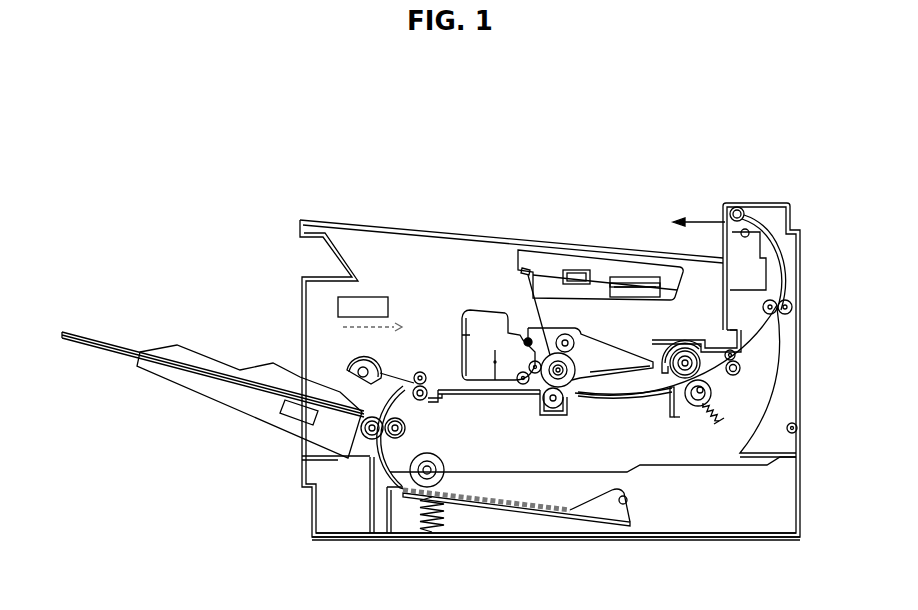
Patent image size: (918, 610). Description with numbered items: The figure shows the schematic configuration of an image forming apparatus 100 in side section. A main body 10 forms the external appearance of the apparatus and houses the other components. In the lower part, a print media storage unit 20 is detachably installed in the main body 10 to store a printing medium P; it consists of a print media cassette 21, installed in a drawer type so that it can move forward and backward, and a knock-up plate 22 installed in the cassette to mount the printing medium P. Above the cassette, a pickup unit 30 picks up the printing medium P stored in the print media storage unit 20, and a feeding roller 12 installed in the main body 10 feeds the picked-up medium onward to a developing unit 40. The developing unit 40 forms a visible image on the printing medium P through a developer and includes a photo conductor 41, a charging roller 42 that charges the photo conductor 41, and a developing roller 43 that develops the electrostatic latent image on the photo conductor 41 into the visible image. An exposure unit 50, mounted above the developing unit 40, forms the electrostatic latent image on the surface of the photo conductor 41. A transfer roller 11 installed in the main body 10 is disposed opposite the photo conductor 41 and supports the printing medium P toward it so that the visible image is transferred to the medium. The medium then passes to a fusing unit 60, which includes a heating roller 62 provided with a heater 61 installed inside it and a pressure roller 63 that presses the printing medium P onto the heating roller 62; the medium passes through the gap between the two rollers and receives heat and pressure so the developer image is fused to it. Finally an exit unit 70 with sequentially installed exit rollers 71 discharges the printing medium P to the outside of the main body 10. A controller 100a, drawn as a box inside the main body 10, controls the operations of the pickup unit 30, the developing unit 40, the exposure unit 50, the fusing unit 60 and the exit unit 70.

The image forming apparatus 100 is at (513, 129).
The controller 100a is at (337, 303).
The main body 10 is at (485, 230).
The transfer roller 11 is at (551, 406).
The feeding roller 12 is at (406, 424).
The print media storage unit 20 is at (550, 544).
The print media cassette 21 is at (600, 540).
The knock-up plate 22 is at (515, 509).
The printing medium P is at (520, 495).
The pickup unit 30 is at (447, 451).
The developing unit 40 is at (455, 315).
The photo conductor 41 is at (567, 378).
The charging roller 42 is at (565, 336).
The developing roller 43 is at (527, 339).
The exposure unit 50 is at (622, 250).
The fusing unit 60 is at (686, 416).
The heater 61 is at (685, 356).
The heating roller 62 is at (666, 350).
The pressure roller 63 is at (712, 387).
The exit unit 70 is at (751, 211).
The exit rollers 71 is at (736, 207).